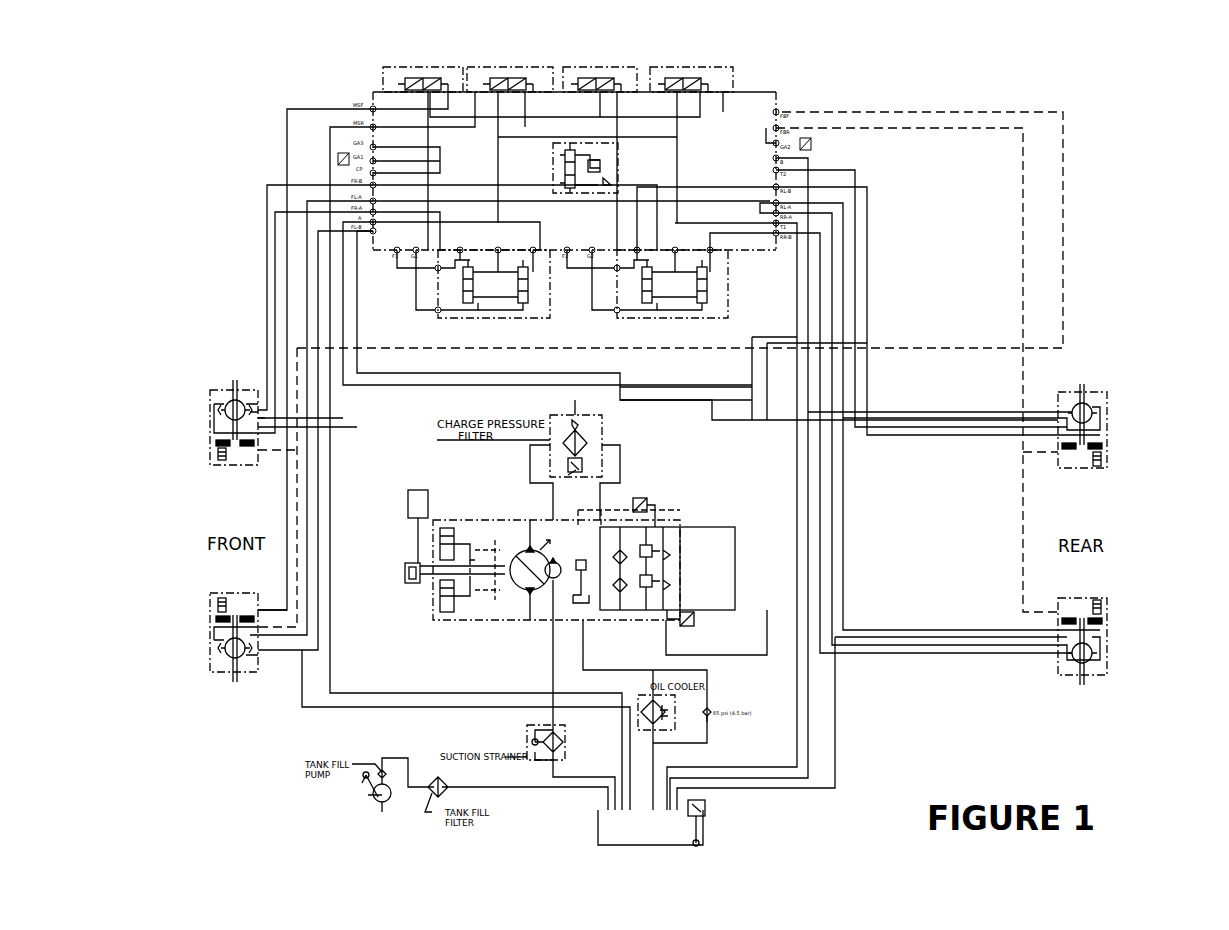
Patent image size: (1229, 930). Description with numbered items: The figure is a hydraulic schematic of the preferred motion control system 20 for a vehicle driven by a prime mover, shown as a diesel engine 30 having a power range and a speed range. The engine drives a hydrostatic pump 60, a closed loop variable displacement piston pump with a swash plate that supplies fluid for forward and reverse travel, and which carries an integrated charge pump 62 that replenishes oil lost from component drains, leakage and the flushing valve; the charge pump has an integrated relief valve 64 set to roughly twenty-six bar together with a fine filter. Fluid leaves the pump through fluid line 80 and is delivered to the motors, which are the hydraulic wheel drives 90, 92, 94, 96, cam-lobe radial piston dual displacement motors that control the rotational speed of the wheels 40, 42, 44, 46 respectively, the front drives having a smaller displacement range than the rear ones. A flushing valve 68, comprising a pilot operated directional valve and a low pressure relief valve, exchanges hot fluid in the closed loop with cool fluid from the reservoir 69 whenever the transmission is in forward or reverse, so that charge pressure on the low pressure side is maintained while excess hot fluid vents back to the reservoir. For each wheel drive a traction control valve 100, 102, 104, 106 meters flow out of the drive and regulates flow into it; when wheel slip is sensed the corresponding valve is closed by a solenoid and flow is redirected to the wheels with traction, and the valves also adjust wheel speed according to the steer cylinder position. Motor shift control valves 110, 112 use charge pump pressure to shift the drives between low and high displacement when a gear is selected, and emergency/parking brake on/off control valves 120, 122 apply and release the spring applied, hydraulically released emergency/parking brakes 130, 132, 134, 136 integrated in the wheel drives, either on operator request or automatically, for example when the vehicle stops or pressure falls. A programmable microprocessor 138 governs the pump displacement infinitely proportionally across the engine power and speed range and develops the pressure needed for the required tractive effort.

The motion control system 20 is at (866, 696).
The diesel engine 30 is at (405, 576).
The wheel 40 is at (204, 411).
The wheel 42 is at (215, 652).
The wheel 44 is at (1125, 409).
The wheel 46 is at (1111, 651).
The hydrostatic pump 60 is at (535, 600).
The charge pump 62 is at (560, 585).
The relief valve 64 is at (577, 580).
The flushing valve 68 is at (553, 180).
The reservoir 69 is at (705, 825).
The fluid line 80 is at (700, 527).
The hydraulic wheel drive 90 is at (222, 404).
The hydraulic wheel drive 92 is at (226, 655).
The hydraulic wheel drive 94 is at (1092, 400).
The hydraulic wheel drive 96 is at (1090, 664).
The traction control valve 100 is at (468, 303).
The traction control valve 102 is at (524, 303).
The traction control valve 104 is at (647, 303).
The traction control valve 106 is at (707, 300).
The motor shift control valve 110 is at (430, 80).
The motor shift control valve 112 is at (507, 78).
The emergency/parking brake on/off control valve 120 is at (590, 78).
The emergency/parking brake on/off control valve 122 is at (672, 78).
The emergency/parking brake 130 is at (218, 462).
The emergency/parking brake 132 is at (222, 598).
The emergency/parking brake 134 is at (1100, 468).
The emergency/parking brake 136 is at (1100, 600).
The microprocessor 138 is at (410, 490).